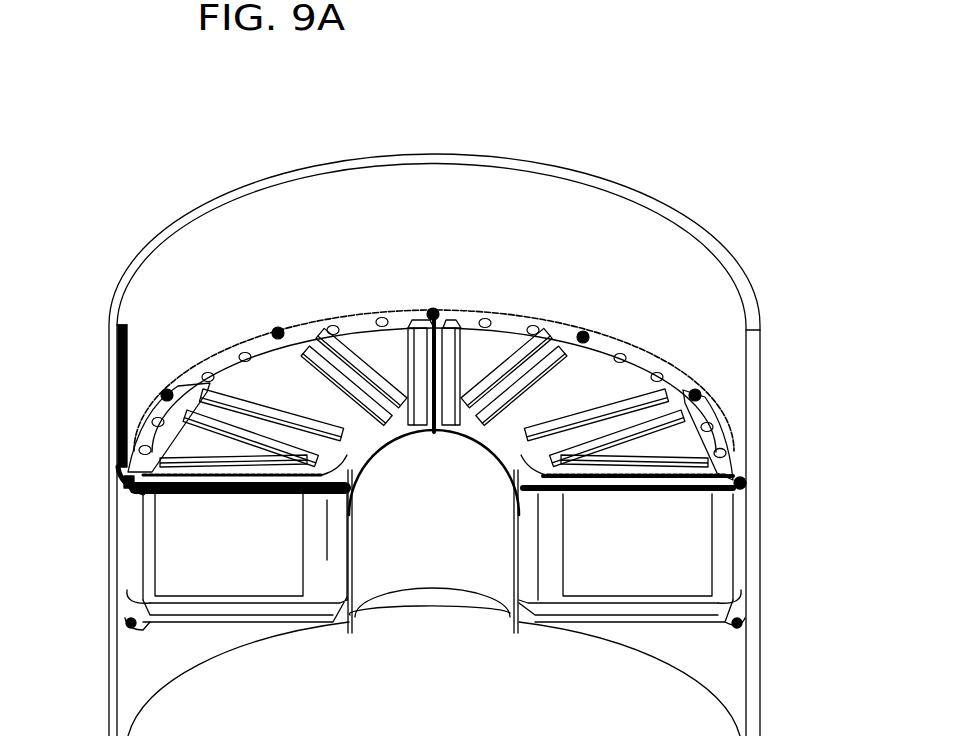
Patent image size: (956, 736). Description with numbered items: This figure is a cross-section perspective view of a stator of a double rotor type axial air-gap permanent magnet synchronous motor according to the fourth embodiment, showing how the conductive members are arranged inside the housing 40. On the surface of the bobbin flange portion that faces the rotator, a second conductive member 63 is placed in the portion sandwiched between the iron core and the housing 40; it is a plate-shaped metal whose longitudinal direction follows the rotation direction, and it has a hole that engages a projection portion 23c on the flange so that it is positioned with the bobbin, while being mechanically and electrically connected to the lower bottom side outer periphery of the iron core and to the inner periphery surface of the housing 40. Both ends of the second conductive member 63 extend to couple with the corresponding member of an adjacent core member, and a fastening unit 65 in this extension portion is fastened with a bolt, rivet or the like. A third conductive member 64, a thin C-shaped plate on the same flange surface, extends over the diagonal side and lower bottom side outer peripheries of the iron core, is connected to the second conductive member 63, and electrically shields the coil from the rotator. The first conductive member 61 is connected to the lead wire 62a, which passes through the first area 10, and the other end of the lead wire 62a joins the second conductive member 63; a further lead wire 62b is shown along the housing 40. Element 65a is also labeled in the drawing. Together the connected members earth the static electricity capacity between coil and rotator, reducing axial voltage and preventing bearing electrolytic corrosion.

The housing 40 is at (718, 250).
The lead wire 62b is at (122, 360).
The fastening block 65a is at (128, 480).
The first area 10 is at (143, 493).
The lead wire 62a is at (190, 493).
The first conductive member 61 is at (360, 595).
The third conductive member 64 is at (533, 507).
The second conductive member 63 is at (720, 430).
The projection portion 23c is at (723, 448).
The fastening unit 65 is at (743, 483).